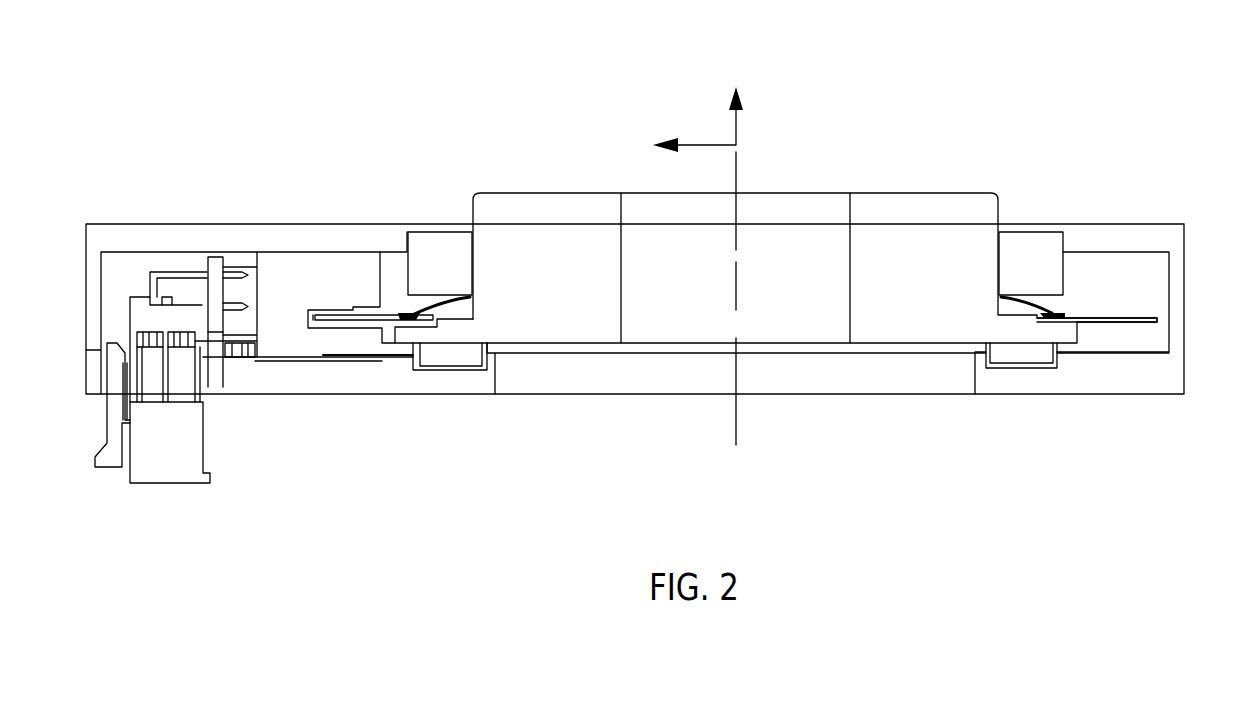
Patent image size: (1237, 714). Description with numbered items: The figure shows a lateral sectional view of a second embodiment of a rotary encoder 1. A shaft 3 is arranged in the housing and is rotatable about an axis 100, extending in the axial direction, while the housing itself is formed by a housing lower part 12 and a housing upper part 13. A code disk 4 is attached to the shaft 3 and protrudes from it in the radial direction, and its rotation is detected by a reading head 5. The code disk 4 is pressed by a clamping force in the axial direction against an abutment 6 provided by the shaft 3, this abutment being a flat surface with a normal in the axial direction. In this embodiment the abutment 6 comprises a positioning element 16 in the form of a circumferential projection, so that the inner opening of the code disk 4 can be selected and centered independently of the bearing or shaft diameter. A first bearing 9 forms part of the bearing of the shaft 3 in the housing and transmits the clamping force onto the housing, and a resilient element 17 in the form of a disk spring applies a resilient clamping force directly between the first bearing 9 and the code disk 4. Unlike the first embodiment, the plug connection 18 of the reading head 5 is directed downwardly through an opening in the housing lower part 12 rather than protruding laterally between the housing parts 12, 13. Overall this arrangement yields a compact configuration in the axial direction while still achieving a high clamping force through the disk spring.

The rotary encoder 1 is at (1064, 88).
The shaft 3 is at (907, 207).
The code disk 4 is at (332, 310).
The reading head 5 is at (283, 267).
The abutment 6 is at (398, 312).
The first bearing 9 is at (1025, 243).
The housing lower part 12 is at (318, 387).
The housing upper part 13 is at (238, 235).
The positioning element 16 is at (438, 320).
The resilient element 17 is at (1050, 312).
The plug connection 18 is at (162, 473).
The axis 100 is at (718, 270).